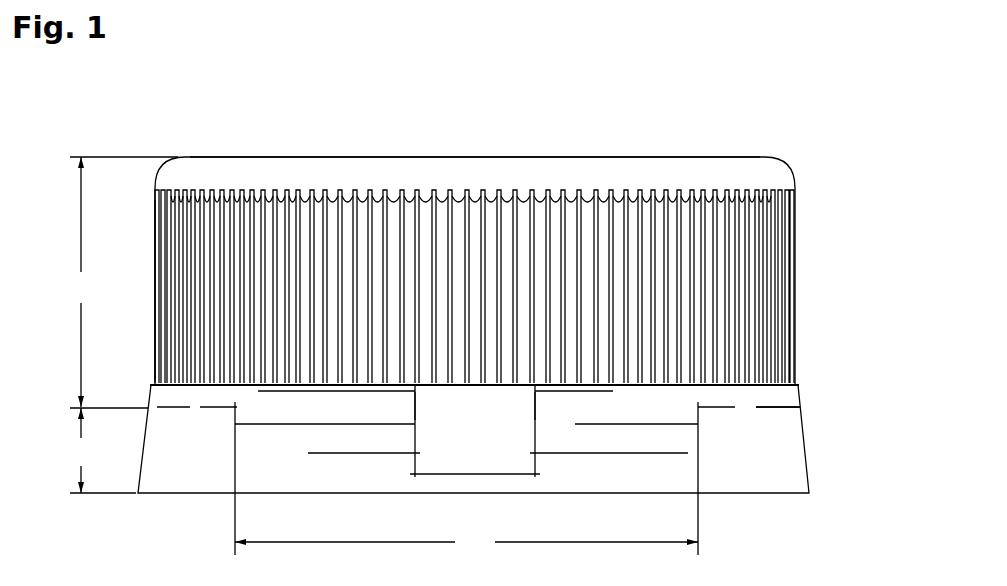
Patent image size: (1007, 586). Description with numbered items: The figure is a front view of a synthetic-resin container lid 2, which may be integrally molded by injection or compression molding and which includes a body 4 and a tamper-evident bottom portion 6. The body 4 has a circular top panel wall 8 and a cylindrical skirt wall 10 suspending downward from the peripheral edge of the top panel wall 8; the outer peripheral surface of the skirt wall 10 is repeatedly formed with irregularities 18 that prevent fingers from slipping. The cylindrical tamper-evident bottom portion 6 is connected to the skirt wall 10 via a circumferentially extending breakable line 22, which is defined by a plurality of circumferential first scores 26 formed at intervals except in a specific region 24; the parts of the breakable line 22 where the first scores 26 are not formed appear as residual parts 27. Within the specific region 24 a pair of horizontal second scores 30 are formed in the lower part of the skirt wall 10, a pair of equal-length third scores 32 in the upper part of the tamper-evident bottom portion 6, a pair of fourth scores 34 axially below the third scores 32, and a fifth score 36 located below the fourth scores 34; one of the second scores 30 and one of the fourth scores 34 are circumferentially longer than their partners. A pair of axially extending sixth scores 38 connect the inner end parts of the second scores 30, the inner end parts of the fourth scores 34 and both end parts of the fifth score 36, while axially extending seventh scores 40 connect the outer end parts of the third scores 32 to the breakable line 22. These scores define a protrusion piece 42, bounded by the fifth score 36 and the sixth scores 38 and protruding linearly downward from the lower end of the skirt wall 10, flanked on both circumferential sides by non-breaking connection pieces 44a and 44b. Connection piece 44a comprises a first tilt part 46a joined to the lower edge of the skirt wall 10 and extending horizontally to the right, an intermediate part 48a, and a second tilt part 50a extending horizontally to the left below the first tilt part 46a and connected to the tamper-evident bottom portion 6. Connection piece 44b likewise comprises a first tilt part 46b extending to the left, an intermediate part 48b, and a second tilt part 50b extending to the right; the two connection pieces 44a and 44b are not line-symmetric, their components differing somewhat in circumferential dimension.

The container lid 2 is at (583, 124).
The body 4 is at (124, 282).
The tamper-evident bottom portion 6 is at (109, 450).
The top panel wall 8 is at (428, 154).
The skirt wall 10 is at (150, 243).
The irregularities 18 is at (683, 213).
The breakable line 22 is at (143, 414).
The specific region 24 is at (466, 492).
The first scores 26 is at (175, 409).
The residual parts 27 is at (756, 403).
The second scores 30 is at (268, 392).
The third scores 32 is at (258, 426).
The fourth scores 34 is at (325, 454).
The fifth score 36 is at (524, 476).
The sixth scores 38 is at (415, 440).
The seventh scores 40 is at (232, 418).
The protrusion piece 42 is at (488, 448).
The non-breaking connection piece 44a is at (261, 404).
The non-breaking connection piece 44b is at (684, 402).
The first tilt part 46a is at (368, 423).
The first tilt part 46b is at (640, 423).
The intermediate part 48a is at (400, 415).
The intermediate part 48b is at (531, 407).
The second tilt part 50a is at (368, 451).
The second tilt part 50b is at (642, 451).